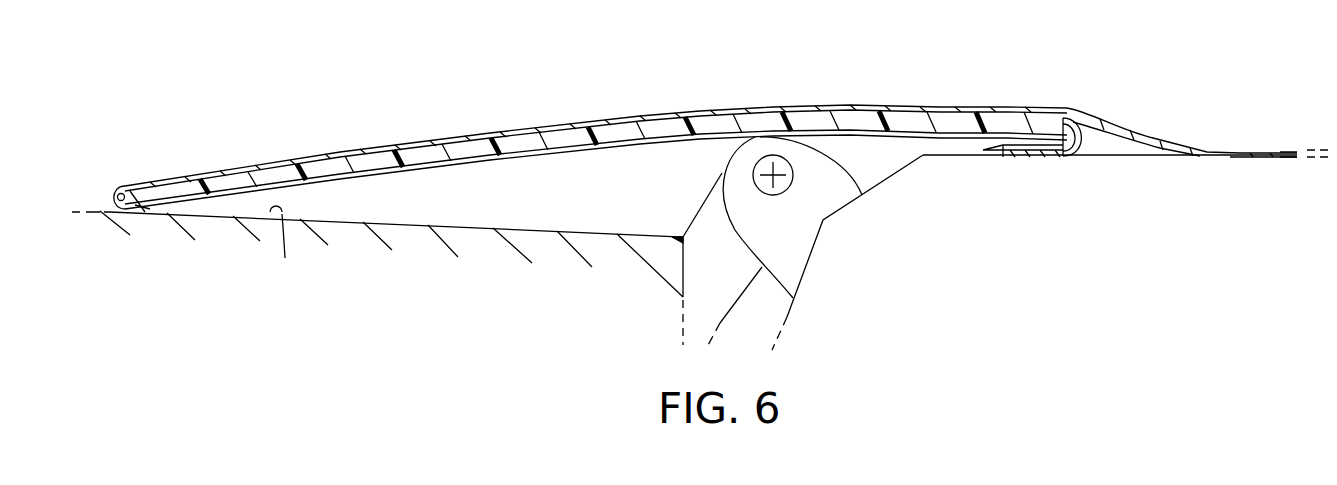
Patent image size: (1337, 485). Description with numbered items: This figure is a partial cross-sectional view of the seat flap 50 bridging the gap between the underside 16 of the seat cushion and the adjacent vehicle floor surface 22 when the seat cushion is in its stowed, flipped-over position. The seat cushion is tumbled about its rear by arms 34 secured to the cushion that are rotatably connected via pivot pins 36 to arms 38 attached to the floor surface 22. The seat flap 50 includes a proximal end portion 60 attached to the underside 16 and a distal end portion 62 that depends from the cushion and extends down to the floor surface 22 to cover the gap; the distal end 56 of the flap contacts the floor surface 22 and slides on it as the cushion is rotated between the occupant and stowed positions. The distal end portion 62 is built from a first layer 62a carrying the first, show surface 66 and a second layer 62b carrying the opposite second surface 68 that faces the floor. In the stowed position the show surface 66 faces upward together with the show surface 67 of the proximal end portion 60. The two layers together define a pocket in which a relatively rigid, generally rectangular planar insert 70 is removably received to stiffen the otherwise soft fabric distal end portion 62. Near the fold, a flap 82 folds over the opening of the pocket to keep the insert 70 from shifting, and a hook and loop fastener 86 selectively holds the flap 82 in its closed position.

The underside 16 is at (1160, 157).
The floor surface 22 is at (281, 250).
The arms 34 is at (790, 252).
The pivot pins 36 is at (786, 182).
The arms 38 is at (680, 296).
The seat flap 50 is at (584, 166).
The distal end 56 is at (114, 191).
The proximal end portion 60 is at (1239, 152).
The distal end portion 62 is at (616, 180).
The first layer 62a is at (573, 128).
The second layer 62b is at (472, 166).
The first surface 66 is at (368, 152).
The show surface 67 is at (1278, 149).
The second surface 68 is at (354, 170).
The insert 70 is at (649, 128).
The flap 82 is at (1081, 150).
The hook and loop fastener 86 is at (1042, 157).